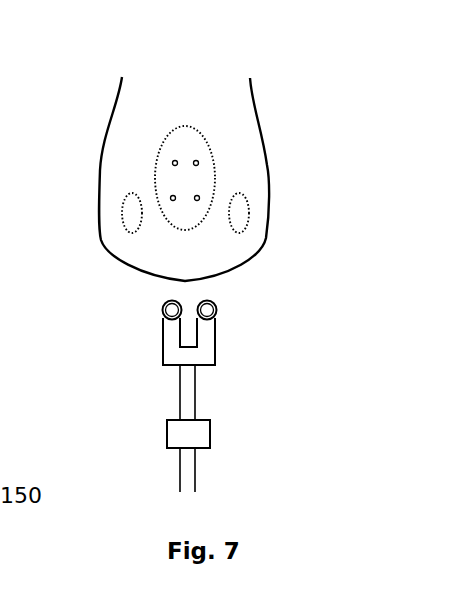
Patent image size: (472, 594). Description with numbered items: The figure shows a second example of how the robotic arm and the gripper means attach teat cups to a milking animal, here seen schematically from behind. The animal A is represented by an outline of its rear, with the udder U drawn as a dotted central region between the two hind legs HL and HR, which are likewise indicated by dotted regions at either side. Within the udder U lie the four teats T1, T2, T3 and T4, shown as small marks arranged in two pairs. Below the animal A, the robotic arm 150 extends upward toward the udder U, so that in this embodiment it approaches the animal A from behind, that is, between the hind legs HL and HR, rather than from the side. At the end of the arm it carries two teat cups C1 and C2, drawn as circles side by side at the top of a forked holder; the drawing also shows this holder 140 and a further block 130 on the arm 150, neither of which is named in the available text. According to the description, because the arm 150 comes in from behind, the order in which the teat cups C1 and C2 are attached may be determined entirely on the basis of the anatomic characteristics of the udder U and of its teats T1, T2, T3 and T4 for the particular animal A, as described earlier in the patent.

The animal A is at (170, 61).
The udder U is at (164, 138).
The hind leg HL is at (121, 217).
The hind leg HR is at (245, 232).
The teat T1 is at (198, 200).
The teat T2 is at (172, 200).
The teat T3 is at (199, 163).
The teat T4 is at (172, 163).
The teat cup C1 is at (163, 314).
The teat cup C2 is at (217, 314).
The connector 140 is at (217, 353).
The control unit 130 is at (209, 432).
The robotic arm 150 is at (196, 467).